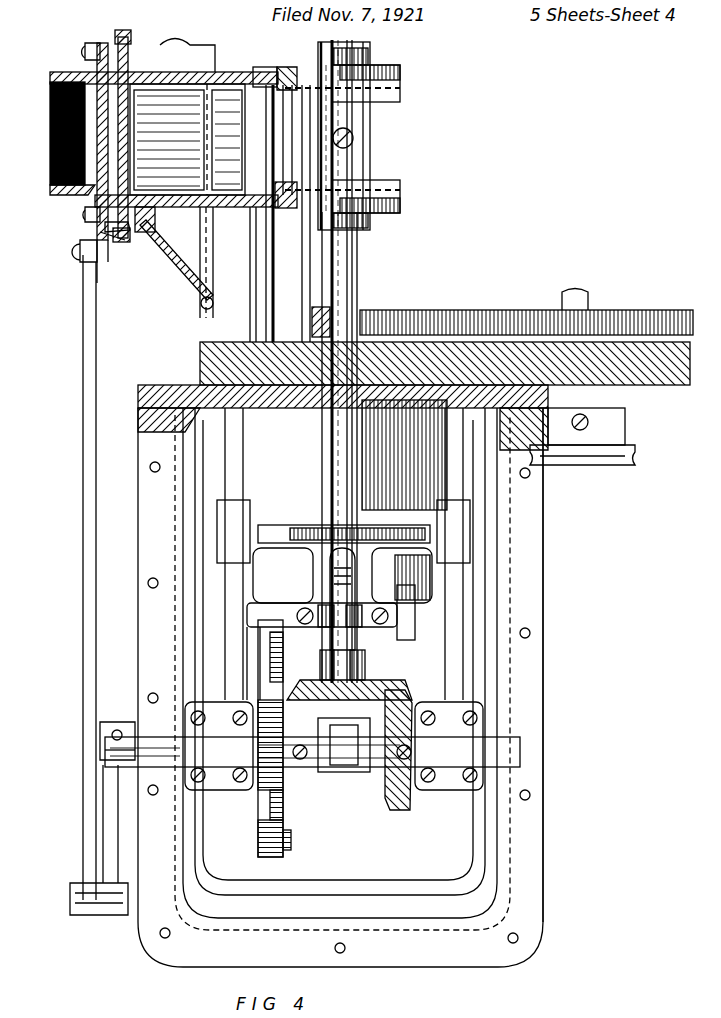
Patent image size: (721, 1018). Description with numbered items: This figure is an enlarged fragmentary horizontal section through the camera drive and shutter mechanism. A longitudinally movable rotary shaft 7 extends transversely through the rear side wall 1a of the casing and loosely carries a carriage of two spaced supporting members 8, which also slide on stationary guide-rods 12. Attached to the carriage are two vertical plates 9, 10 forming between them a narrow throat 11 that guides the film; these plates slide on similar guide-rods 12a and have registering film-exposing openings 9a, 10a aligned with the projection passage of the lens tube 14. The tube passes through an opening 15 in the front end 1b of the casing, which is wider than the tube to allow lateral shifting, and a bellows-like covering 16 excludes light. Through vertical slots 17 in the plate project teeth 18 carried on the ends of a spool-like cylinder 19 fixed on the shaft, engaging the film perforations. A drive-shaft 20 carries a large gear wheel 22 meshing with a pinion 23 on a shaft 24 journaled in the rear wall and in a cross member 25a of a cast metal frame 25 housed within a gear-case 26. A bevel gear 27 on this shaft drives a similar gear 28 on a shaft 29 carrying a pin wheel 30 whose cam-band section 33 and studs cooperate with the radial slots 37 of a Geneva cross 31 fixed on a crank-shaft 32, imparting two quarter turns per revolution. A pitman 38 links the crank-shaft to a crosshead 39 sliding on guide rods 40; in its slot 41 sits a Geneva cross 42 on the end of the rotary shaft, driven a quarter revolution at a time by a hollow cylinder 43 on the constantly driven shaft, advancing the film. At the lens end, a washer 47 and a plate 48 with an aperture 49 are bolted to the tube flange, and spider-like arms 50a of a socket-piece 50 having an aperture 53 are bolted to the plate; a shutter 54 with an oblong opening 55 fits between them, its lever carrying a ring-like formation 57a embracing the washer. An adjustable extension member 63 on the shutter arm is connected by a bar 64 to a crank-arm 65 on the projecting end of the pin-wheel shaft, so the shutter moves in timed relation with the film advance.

The rear side wall 1a is at (628, 408).
The front end of the casing 1b is at (200, 344).
The rotary shaft 7 is at (358, 272).
The supporting members 8 is at (401, 80).
The plate 9 is at (288, 80).
The film-exposing opening 9a is at (333, 136).
The plate 10 is at (279, 66).
The film-exposing opening 10a is at (280, 128).
The passage or throat 11 is at (283, 150).
The guide-rods 12 is at (320, 277).
The guide-rods 12a is at (258, 247).
The lens tube or barrel 14 is at (193, 210).
The opening 15 is at (200, 310).
The bellows-like covering 16 is at (180, 45).
The vertical slots 17 is at (357, 62).
The prongs or teeth 18 is at (401, 89).
The spool-like cylinder 19 is at (367, 156).
The drive-shaft 20 is at (590, 296).
The large gear wheel 22 is at (516, 316).
The pinion 23 is at (375, 312).
The shaft 24 is at (332, 640).
The cast metal frame 25 is at (480, 656).
The cross member 25a is at (408, 628).
The gear-case 26 is at (527, 828).
The bevel gear 27 is at (372, 686).
The bevel gear 28 is at (400, 808).
The shaft 29 is at (152, 740).
The pin wheel 30 is at (260, 836).
The Geneva cross 31 is at (282, 775).
The crank-shaft 32 is at (380, 770).
The arcuate section of cam-band 33 is at (285, 850).
The radial slots 37 is at (288, 663).
The connecting-rod or pitman 38 is at (348, 640).
The crosshead 39 is at (297, 548).
The guide rods 40 is at (250, 590).
The slot 41 is at (273, 525).
The Geneva cross 42 is at (315, 526).
The hollow cylinder 43 is at (425, 480).
The circular disk or washer 47 is at (145, 233).
The plate 48 is at (105, 227).
The aperture 49 is at (113, 151).
The socket-piece 50 is at (50, 176).
The spider-like arms 50a is at (95, 52).
The aperture 53 is at (96, 133).
The shutter 54 is at (104, 110).
The oblong opening 55 is at (100, 236).
The ring-like formation 57a is at (124, 33).
The adjustable extension member 63 is at (103, 280).
The bar or pitman 64 is at (88, 520).
The crank-arm 65 is at (105, 838).